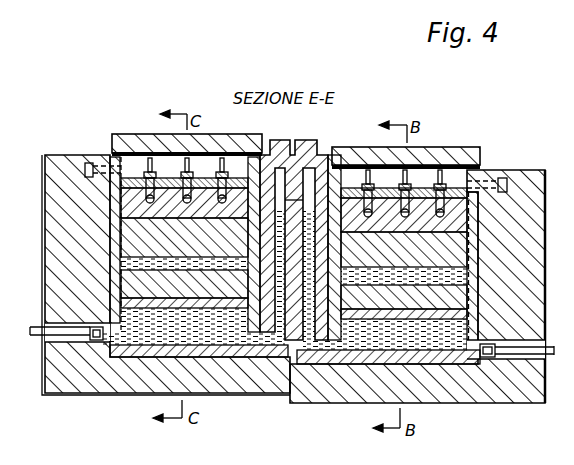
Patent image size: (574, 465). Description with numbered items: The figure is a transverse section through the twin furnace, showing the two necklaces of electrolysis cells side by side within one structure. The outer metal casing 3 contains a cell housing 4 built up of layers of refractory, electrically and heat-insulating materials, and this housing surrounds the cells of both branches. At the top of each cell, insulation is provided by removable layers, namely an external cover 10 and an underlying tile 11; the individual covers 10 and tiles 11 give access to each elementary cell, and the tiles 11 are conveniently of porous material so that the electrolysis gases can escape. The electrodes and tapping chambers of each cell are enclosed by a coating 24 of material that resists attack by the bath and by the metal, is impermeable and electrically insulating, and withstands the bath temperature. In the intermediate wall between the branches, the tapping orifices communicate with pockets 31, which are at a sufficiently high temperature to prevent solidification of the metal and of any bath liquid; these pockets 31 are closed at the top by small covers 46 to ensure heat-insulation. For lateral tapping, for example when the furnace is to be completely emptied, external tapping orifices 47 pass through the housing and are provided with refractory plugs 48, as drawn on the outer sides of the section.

The metal casing 3 is at (483, 400).
The cell housing 4 is at (117, 378).
The external cover 10 is at (226, 142).
The tile 11 is at (165, 176).
The coating 24 is at (118, 248).
The pocket 31 is at (294, 191).
The small cover 46 is at (286, 141).
The external tapping orifice 47 is at (58, 337).
The refractory plug 48 is at (32, 327).